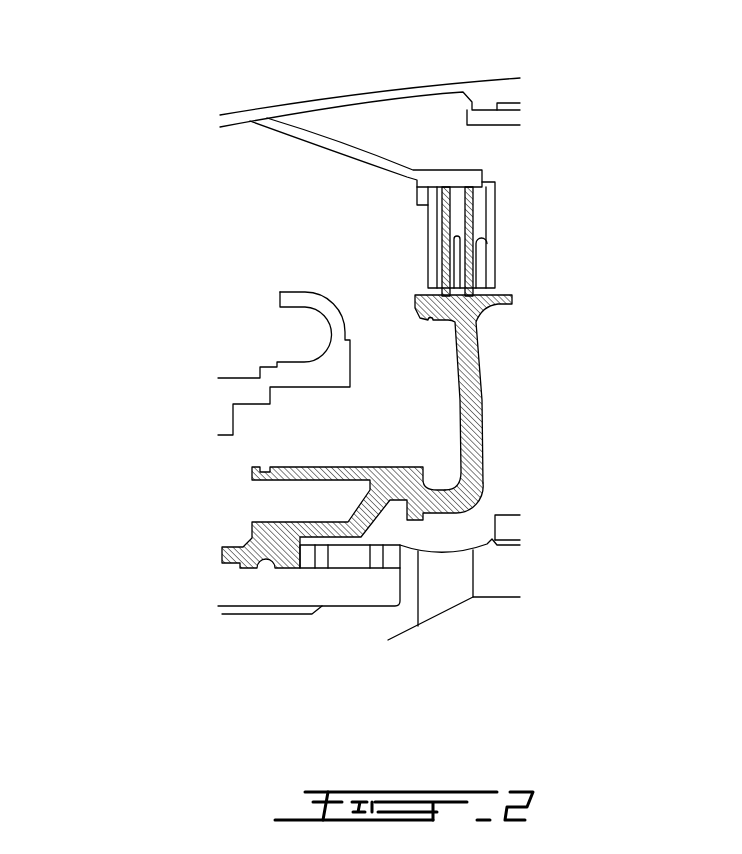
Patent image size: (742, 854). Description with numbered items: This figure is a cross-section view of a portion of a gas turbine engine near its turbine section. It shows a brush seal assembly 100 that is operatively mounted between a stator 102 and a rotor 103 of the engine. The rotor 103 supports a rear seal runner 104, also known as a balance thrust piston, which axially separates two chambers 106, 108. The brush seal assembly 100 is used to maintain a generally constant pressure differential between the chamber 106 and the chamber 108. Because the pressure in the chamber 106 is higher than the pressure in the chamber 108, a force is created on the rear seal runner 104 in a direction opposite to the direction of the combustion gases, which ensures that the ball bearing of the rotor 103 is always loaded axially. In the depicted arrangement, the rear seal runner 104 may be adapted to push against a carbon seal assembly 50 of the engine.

The carbon seal assembly 50 is at (155, 540).
The brush seal assembly 100 is at (507, 225).
The stator 102 is at (458, 170).
The rotor 103 is at (310, 583).
The rear seal runner 104 is at (490, 356).
The chamber 106 is at (497, 410).
The chamber 108 is at (396, 390).